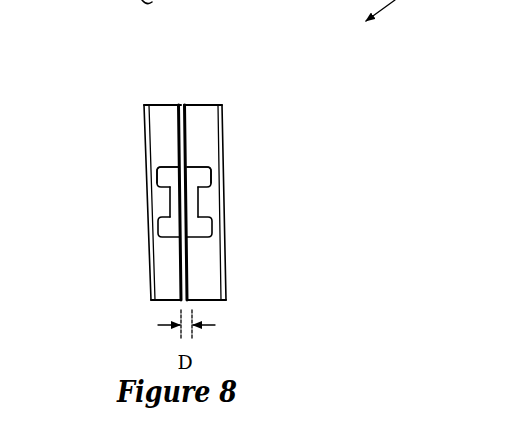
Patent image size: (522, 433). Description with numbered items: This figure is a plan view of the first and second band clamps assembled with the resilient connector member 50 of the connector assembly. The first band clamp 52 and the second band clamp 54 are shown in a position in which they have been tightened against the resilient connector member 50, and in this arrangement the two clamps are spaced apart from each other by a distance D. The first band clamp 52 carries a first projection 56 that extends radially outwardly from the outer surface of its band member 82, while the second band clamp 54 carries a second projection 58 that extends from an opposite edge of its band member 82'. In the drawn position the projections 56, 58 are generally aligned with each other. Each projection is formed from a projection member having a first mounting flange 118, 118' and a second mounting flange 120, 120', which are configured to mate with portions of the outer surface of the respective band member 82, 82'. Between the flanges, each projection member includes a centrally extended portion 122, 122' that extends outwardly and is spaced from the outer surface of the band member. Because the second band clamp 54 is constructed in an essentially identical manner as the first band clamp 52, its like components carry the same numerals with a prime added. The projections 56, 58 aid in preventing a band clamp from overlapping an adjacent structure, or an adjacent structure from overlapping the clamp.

The resilient connector member 50 is at (178, 103).
The first band clamp 52 is at (128, 92).
The second band clamp 54 is at (238, 97).
The first projection 56 is at (164, 156).
The second projection 58 is at (198, 158).
The band member 82 is at (151, 76).
The band member 82' is at (212, 76).
The first mounting flange 118 is at (134, 242).
The first mounting flange 118' is at (239, 238).
The second mounting flange 120 is at (132, 167).
The second mounting flange 120' is at (237, 166).
The centrally extended portion 122 is at (150, 202).
The centrally extended portion 122' is at (227, 202).